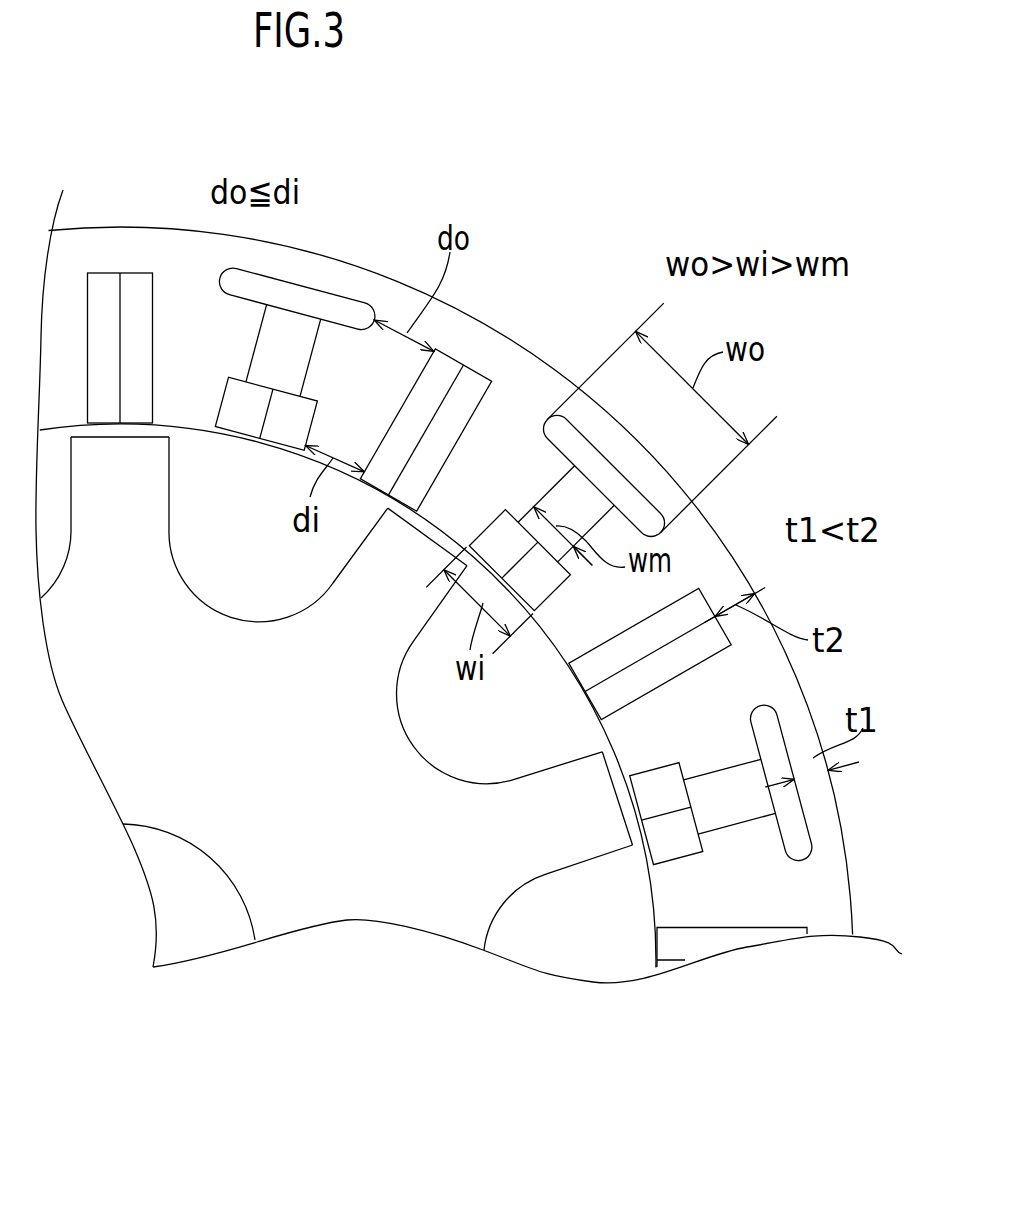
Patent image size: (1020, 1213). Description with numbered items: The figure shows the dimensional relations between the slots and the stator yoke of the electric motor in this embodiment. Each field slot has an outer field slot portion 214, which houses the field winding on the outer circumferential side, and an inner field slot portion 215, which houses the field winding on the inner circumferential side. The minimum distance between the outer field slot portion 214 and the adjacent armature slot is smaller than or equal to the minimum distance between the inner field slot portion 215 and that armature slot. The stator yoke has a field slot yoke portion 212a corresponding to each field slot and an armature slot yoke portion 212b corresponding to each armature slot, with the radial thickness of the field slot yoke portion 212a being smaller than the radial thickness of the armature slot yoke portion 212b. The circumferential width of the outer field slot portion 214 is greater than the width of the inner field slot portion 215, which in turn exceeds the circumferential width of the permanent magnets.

The outer field slot portion 214 is at (358, 304).
The inner field slot portion 215 is at (292, 442).
The field slot yoke portion 212a is at (823, 828).
The armature slot yoke portion 212b is at (731, 586).